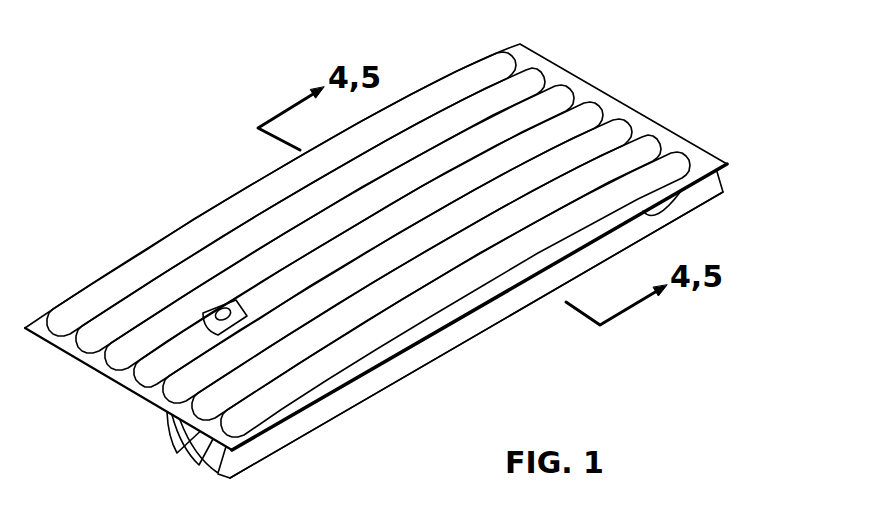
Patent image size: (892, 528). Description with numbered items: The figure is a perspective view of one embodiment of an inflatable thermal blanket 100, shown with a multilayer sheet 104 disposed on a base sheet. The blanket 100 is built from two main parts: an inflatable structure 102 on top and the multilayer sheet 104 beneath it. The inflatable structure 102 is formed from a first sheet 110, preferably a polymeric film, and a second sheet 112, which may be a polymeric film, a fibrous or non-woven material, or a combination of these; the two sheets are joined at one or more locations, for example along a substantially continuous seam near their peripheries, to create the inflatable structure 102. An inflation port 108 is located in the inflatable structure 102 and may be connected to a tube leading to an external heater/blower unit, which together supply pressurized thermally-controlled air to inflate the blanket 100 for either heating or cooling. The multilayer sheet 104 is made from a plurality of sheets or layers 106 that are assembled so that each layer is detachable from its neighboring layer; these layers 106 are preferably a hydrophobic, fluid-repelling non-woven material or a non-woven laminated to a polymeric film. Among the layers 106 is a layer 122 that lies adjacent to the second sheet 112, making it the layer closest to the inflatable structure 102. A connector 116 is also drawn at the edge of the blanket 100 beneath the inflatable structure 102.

The inflatable thermal blanket 100 is at (243, 166).
The inflatable structure 102 is at (458, 78).
The multilayer sheet 104 is at (140, 397).
The layers 106 is at (214, 473).
The inflation port 108 is at (213, 306).
The first sheet 110 is at (703, 157).
The second sheet 112 is at (720, 168).
The outlet connector 116 is at (667, 212).
The layer 122 is at (303, 437).